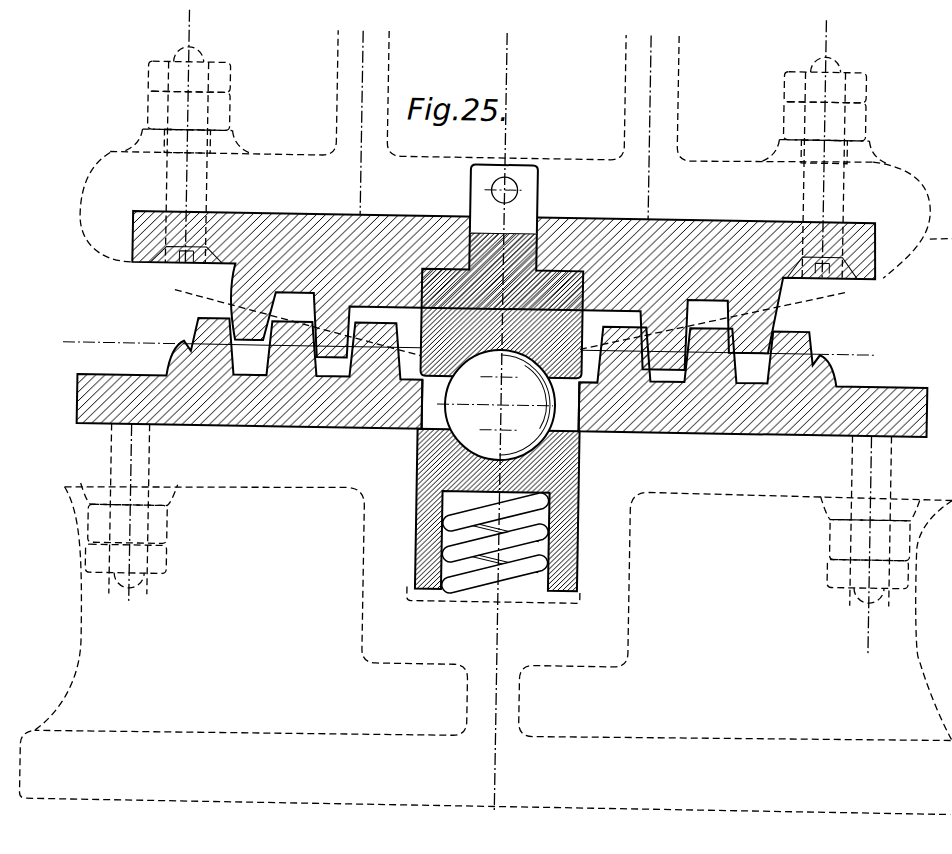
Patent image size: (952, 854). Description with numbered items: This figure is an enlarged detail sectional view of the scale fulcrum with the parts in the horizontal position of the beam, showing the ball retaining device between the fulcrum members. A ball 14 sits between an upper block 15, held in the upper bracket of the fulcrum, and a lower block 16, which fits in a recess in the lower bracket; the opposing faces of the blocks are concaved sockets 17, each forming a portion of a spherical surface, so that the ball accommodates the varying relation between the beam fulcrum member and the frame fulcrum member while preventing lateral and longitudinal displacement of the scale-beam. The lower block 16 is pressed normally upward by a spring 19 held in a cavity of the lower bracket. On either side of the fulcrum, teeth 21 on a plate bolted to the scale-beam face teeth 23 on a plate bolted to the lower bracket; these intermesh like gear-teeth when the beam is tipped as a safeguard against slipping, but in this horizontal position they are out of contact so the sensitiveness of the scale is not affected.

The ball 14 is at (496, 405).
The upper block 15 is at (546, 284).
The lower block 16 is at (568, 456).
The sockets 17 is at (449, 374).
The spring 19 is at (468, 591).
The teeth 21 is at (246, 289).
The teeth 23 is at (182, 335).